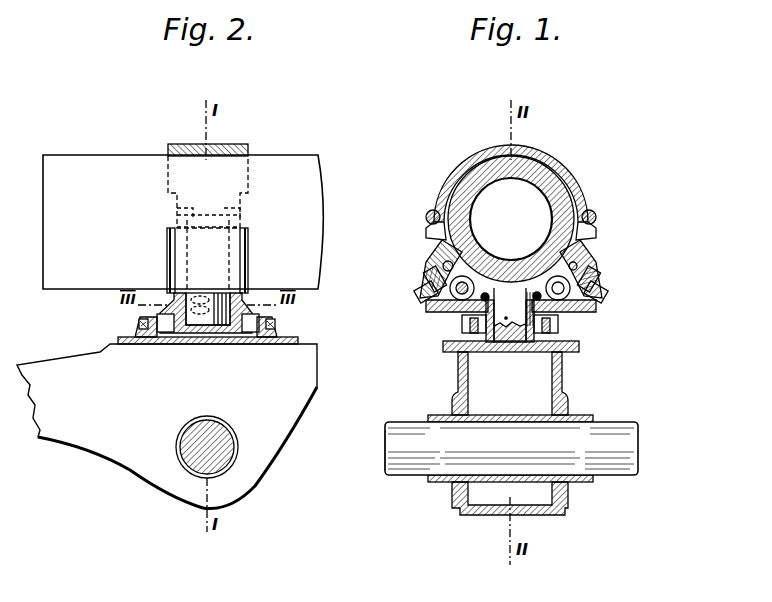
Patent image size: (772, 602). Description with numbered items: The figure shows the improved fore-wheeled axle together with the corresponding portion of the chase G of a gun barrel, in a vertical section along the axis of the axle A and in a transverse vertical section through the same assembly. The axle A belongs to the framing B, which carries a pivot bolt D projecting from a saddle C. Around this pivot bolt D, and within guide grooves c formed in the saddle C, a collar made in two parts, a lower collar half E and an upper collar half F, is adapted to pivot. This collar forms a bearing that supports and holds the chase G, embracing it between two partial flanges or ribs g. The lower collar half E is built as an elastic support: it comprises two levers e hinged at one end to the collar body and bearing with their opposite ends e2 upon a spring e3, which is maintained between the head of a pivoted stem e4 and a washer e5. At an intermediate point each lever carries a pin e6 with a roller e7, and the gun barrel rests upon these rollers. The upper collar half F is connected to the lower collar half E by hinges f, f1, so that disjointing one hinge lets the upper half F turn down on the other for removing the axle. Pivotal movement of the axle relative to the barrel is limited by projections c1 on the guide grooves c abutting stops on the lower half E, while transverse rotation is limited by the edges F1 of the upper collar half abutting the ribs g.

In FIG. 2, the axle A is at (193, 452).
In FIG. 1, the axle A is at (563, 440).
In FIG. 2, the framing B is at (278, 416).
In FIG. 1, the framing B is at (460, 377).
In FIG. 2, the saddle C is at (163, 346).
In FIG. 1, the saddle C is at (488, 350).
In FIG. 2, the guide grooves c is at (141, 326).
In FIG. 2, the projections c1 is at (312, 306).
In FIG. 2, the pivot bolt D is at (212, 327).
In FIG. 1, the pivot bolt D is at (510, 329).
In FIG. 2, the lower collar half E is at (243, 300).
In FIG. 1, the lower collar half E is at (452, 314).
In FIG. 1, the levers e is at (570, 298).
In FIG. 1, the lever ends e2 is at (622, 250).
In FIG. 1, the spring e3 is at (622, 275).
In FIG. 1, the stem e4 is at (430, 291).
In FIG. 1, the washer e5 is at (608, 296).
In FIG. 1, the pin e6 is at (542, 331).
In FIG. 1, the roller e7 is at (466, 283).
In FIG. 2, the upper collar half F is at (189, 150).
In FIG. 1, the upper collar half F is at (543, 162).
In FIG. 2, the edges F1 is at (262, 214).
In FIG. 1, the hinge f is at (430, 214).
In FIG. 1, the hinge f1 is at (592, 213).
In FIG. 2, the chase of the gun barrel G is at (98, 170).
In FIG. 2, the partial flanges or ribs g is at (170, 253).